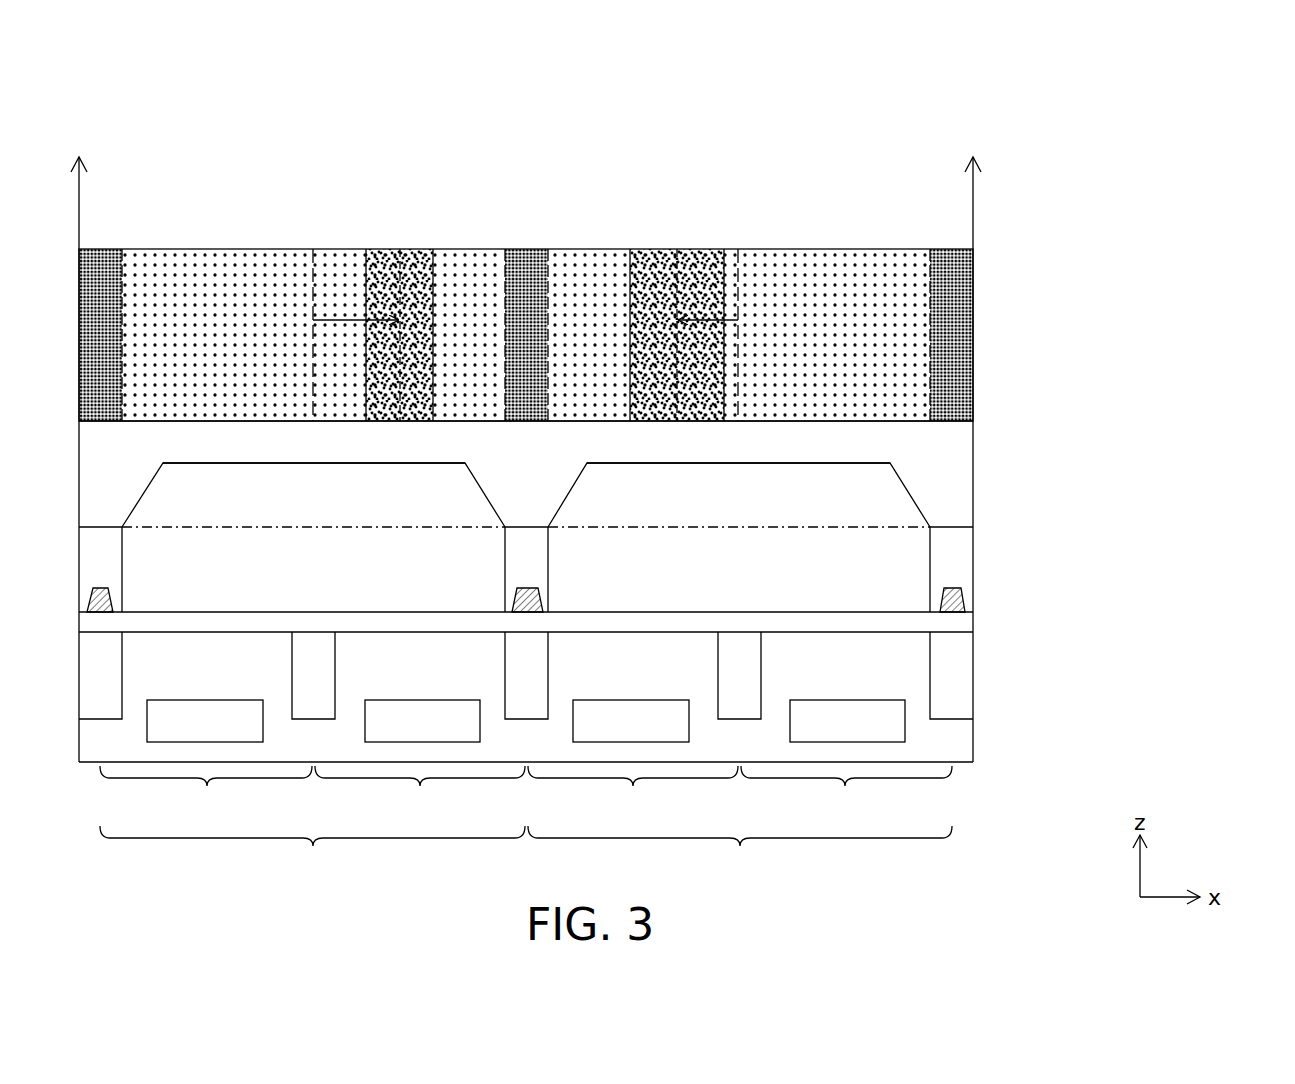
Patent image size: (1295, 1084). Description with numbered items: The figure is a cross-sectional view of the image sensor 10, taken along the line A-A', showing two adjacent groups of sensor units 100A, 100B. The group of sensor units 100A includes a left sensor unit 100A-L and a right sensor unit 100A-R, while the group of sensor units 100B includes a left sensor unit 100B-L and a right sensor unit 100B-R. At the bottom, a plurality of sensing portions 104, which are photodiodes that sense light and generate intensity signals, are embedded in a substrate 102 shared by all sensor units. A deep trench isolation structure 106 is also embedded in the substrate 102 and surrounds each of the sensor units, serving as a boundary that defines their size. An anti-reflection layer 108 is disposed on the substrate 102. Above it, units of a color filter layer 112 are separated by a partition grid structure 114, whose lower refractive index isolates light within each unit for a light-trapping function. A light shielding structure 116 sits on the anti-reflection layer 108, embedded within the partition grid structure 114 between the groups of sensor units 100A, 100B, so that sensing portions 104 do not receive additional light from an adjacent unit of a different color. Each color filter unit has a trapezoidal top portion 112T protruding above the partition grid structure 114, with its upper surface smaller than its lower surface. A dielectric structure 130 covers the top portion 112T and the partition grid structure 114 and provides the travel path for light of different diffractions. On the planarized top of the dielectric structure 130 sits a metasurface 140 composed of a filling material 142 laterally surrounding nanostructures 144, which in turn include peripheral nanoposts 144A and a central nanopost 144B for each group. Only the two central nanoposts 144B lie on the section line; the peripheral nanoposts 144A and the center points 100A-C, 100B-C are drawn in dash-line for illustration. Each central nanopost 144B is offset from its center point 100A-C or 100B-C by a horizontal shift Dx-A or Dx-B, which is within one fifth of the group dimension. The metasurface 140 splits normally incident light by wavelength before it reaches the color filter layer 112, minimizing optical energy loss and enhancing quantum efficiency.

The image sensor 10 is at (140, 132).
The substrate 102 is at (957, 743).
The sensing portions 104 is at (455, 724).
The deep trench isolation structure 106 is at (955, 672).
The anti-reflection layer 108 is at (955, 622).
The color filter layer 112 is at (880, 572).
The top portion of the color filter layer 112T is at (880, 490).
The partition grid structure 114 is at (960, 540).
The light shielding structure 116 is at (960, 598).
The dielectric structure 130 is at (960, 445).
The metasurface 140 is at (1118, 62).
The filling material 142 is at (217, 270).
The nanostructures 144 is at (1200, 72).
The peripheral nanoposts 144A is at (100, 265).
The central nanopost 144B is at (412, 265).
The group of sensor units 100A is at (312, 852).
The group of sensor units 100B is at (740, 852).
The left sensor unit 100A-L is at (206, 792).
The right sensor unit 100A-R is at (420, 792).
The left sensor unit 100B-L is at (633, 792).
The right sensor unit 100B-R is at (846, 792).
The center point 100A-C is at (311, 246).
The center point 100B-C is at (740, 246).
The horizontal shift Dx-A is at (338, 318).
The horizontal shift Dx-B is at (710, 318).